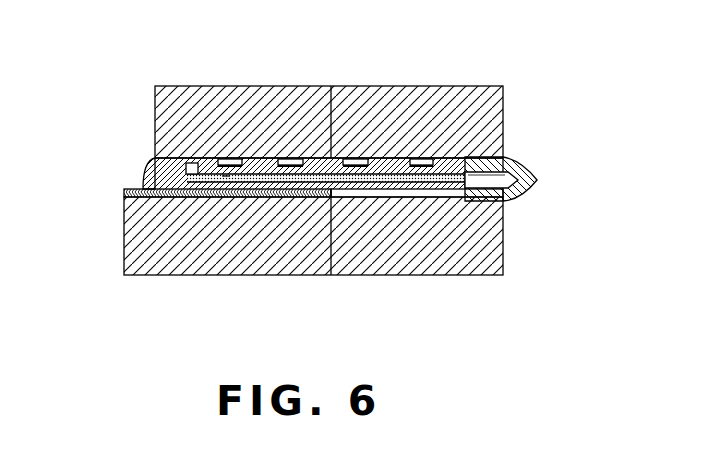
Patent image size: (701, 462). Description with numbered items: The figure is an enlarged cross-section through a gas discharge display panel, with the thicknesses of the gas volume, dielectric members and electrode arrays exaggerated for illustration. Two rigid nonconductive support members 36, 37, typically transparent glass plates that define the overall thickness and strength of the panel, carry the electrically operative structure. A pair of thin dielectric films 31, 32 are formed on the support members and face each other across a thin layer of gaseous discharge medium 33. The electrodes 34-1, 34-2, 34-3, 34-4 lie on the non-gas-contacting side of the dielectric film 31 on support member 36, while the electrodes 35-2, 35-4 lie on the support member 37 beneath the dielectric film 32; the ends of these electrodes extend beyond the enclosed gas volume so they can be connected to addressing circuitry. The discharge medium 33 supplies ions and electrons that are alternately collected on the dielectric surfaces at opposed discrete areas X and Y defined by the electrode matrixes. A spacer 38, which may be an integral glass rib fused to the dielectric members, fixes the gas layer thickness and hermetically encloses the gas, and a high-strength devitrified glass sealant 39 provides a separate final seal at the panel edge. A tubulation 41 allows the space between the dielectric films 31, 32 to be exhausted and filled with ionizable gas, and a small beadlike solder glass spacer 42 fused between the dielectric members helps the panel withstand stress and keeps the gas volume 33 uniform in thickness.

The dielectric film 31 is at (310, 187).
The dielectric film 32 is at (380, 188).
The gaseous discharge medium 33 is at (320, 248).
The electrode 34-1 is at (225, 162).
The electrode 34-2 is at (290, 163).
The electrode 34-3 is at (350, 163).
The electrode 34-4 is at (416, 163).
The electrode 35-2 is at (162, 197).
The electrode 35-4 is at (442, 195).
The nonconductive support member 36 is at (160, 110).
The nonconductive support member 37 is at (130, 243).
The spacer 38 is at (287, 113).
The devitrified glass sealant 39 is at (148, 183).
The tubulation 41 is at (527, 177).
The solder glass spacer 42 is at (348, 185).
The elemental area X is at (198, 176).
The elemental area Y is at (228, 180).